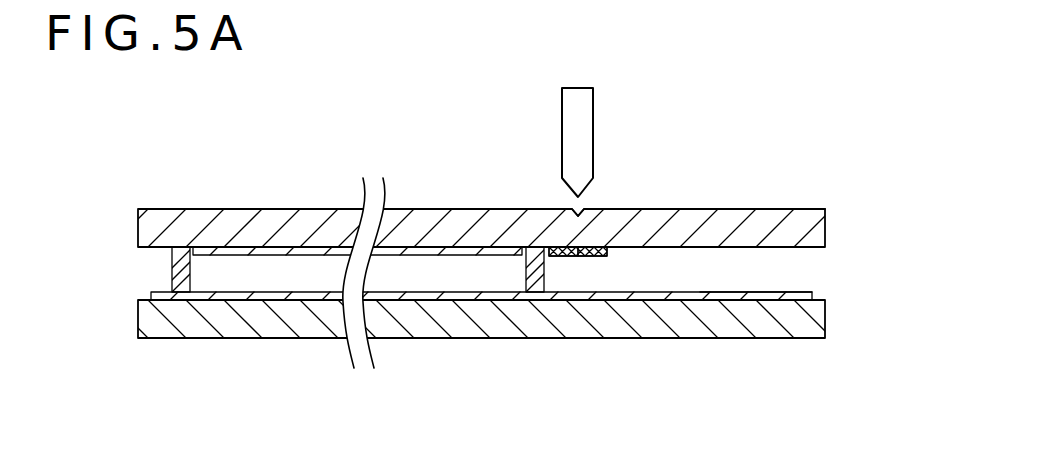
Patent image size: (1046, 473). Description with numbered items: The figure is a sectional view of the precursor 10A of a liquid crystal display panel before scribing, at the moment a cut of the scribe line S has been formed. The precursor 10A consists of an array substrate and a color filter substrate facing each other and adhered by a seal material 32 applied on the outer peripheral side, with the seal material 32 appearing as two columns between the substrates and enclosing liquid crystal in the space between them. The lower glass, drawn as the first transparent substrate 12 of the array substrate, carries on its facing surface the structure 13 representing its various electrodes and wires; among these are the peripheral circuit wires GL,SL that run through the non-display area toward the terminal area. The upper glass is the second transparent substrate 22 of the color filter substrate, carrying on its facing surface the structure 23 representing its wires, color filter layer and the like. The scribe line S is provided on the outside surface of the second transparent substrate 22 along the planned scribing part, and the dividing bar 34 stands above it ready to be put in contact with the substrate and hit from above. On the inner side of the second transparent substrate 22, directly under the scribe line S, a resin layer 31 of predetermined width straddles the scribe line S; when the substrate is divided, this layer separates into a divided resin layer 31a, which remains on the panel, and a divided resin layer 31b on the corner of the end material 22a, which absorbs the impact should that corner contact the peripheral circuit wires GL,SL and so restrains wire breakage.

The precursor of the liquid crystal display panel 10A is at (442, 140).
The first substrate 12 is at (305, 326).
The structure 13 is at (440, 303).
The second transparent substrate 22 is at (212, 219).
The end material 22a is at (728, 219).
The structure 23 is at (300, 251).
The resin layer 31 is at (712, 400).
The divided resin layer 31a is at (568, 257).
The divided resin layer 31b is at (596, 257).
The seal material 32 is at (185, 284).
The dividing bar 34 is at (568, 121).
The scribe line S is at (580, 209).
The peripheral circuit wires GL,SL is at (765, 301).